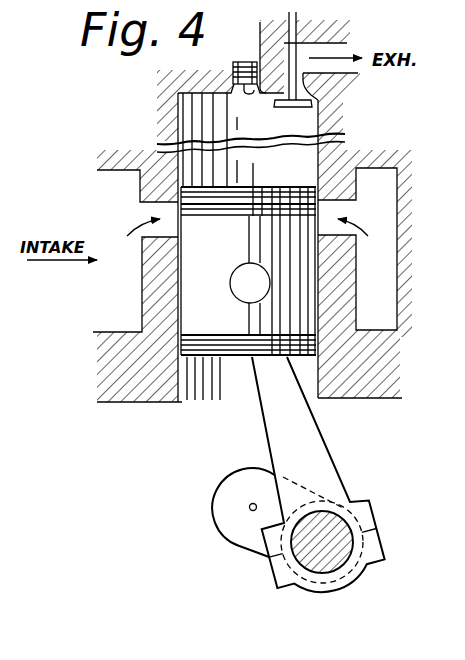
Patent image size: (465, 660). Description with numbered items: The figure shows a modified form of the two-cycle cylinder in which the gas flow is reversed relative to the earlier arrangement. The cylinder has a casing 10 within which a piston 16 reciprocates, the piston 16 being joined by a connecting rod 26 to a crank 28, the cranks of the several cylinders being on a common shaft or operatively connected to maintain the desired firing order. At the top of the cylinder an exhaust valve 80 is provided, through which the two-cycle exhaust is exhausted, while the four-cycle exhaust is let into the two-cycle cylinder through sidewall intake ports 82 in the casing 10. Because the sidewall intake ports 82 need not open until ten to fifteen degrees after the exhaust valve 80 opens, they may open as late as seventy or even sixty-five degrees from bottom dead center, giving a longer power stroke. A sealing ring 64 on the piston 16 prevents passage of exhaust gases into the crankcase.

The casing 10 is at (174, 115).
The exhaust valve 80 is at (322, 104).
The sidewall intake ports 82 is at (147, 210).
The piston 16 is at (203, 284).
The sealing ring 64 is at (182, 346).
The connecting rod 26 is at (267, 430).
The crank 28 is at (323, 566).